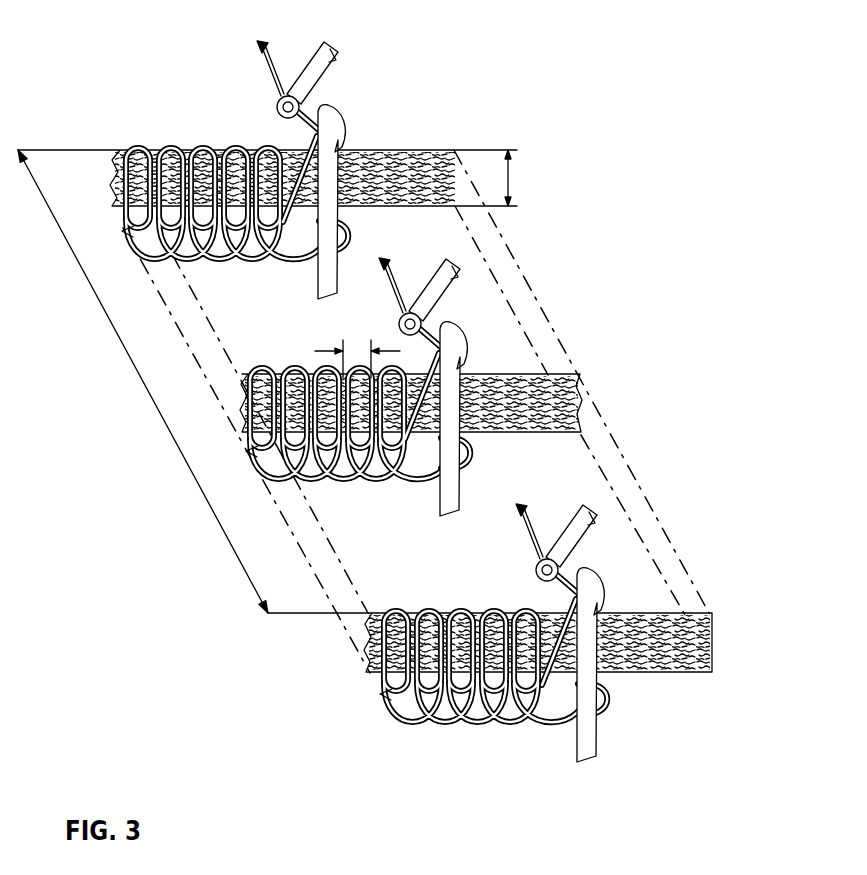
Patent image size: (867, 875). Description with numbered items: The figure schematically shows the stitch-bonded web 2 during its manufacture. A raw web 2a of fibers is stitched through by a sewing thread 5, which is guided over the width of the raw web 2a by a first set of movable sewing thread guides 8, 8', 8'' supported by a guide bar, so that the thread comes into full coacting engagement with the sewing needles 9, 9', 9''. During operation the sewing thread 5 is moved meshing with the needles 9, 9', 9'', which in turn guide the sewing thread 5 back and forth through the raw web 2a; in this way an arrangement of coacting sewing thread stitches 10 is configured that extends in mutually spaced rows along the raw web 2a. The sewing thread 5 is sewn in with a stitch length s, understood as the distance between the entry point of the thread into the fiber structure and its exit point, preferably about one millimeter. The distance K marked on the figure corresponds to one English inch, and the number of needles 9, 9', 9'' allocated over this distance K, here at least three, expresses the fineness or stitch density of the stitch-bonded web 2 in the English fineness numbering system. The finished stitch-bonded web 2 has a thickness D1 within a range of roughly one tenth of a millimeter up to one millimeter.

The stitch-bonded web 2 is at (294, 512).
The raw web 2a is at (535, 433).
The sewing thread 5 is at (384, 698).
The sewing thread guide 8 is at (311, 79).
The sewing thread guide 8' is at (435, 296).
The sewing thread guide 8'' is at (574, 542).
The sewing needle 9 is at (346, 202).
The sewing needle 9' is at (472, 423).
The sewing needle 9'' is at (611, 670).
The sewing thread stitches 10 is at (278, 426).
The distance K is at (106, 316).
The thickness D1 is at (512, 177).
The stitch length s is at (348, 346).